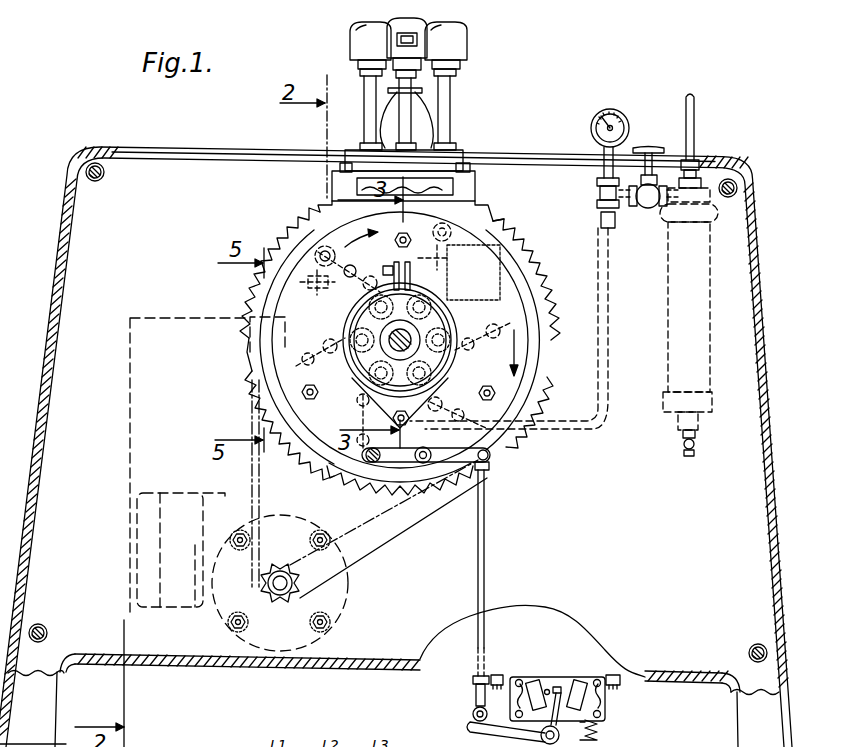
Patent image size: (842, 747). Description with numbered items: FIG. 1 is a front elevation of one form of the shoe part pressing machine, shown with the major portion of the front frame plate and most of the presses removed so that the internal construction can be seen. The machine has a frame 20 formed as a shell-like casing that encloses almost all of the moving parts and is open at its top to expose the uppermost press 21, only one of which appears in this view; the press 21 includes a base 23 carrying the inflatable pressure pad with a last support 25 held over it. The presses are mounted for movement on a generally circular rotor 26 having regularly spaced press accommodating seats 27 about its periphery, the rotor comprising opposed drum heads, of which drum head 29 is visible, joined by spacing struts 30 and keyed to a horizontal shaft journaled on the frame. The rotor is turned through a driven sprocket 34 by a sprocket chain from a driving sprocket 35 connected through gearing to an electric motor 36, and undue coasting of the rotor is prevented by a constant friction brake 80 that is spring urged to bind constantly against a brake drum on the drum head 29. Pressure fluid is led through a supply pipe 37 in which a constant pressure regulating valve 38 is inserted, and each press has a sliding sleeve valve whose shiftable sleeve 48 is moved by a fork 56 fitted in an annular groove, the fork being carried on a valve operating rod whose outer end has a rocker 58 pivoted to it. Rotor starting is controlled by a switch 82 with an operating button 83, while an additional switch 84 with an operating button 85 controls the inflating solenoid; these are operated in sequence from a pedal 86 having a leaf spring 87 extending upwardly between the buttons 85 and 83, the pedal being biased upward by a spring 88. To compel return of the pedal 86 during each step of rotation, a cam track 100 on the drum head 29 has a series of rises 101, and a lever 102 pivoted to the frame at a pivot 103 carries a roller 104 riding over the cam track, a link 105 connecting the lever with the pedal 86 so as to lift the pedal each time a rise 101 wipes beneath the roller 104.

The frame 20 is at (182, 170).
The press 21 is at (452, 66).
The base 23 is at (455, 162).
The last support 25 is at (422, 90).
The rotor 26 is at (542, 352).
The press accommodating seat 27 is at (305, 215).
The drum head 29 is at (515, 383).
The spacing strut 30 is at (312, 400).
The driven sprocket 34 is at (383, 483).
The driving sprocket 35 is at (533, 274).
The electric motor 36 is at (183, 492).
The supply pipe 37 is at (698, 129).
The constant pressure regulating valve 38 is at (687, 333).
The shiftable sleeve 48 is at (446, 316).
The fork 56 is at (452, 326).
The rocker 58 is at (450, 292).
The constant friction brake 80 is at (392, 265).
The switch 82 is at (537, 683).
The operating button 83 is at (547, 690).
The switch 84 is at (587, 690).
The operating button 85 is at (567, 692).
The pedal 86 is at (472, 712).
The leaf spring 87 is at (566, 688).
The spring 88 is at (597, 735).
The cam track 100 is at (307, 465).
The rise 101 is at (440, 490).
The lever 102 is at (455, 462).
The pivot 103 is at (365, 462).
The roller 104 is at (425, 465).
The link 105 is at (487, 578).